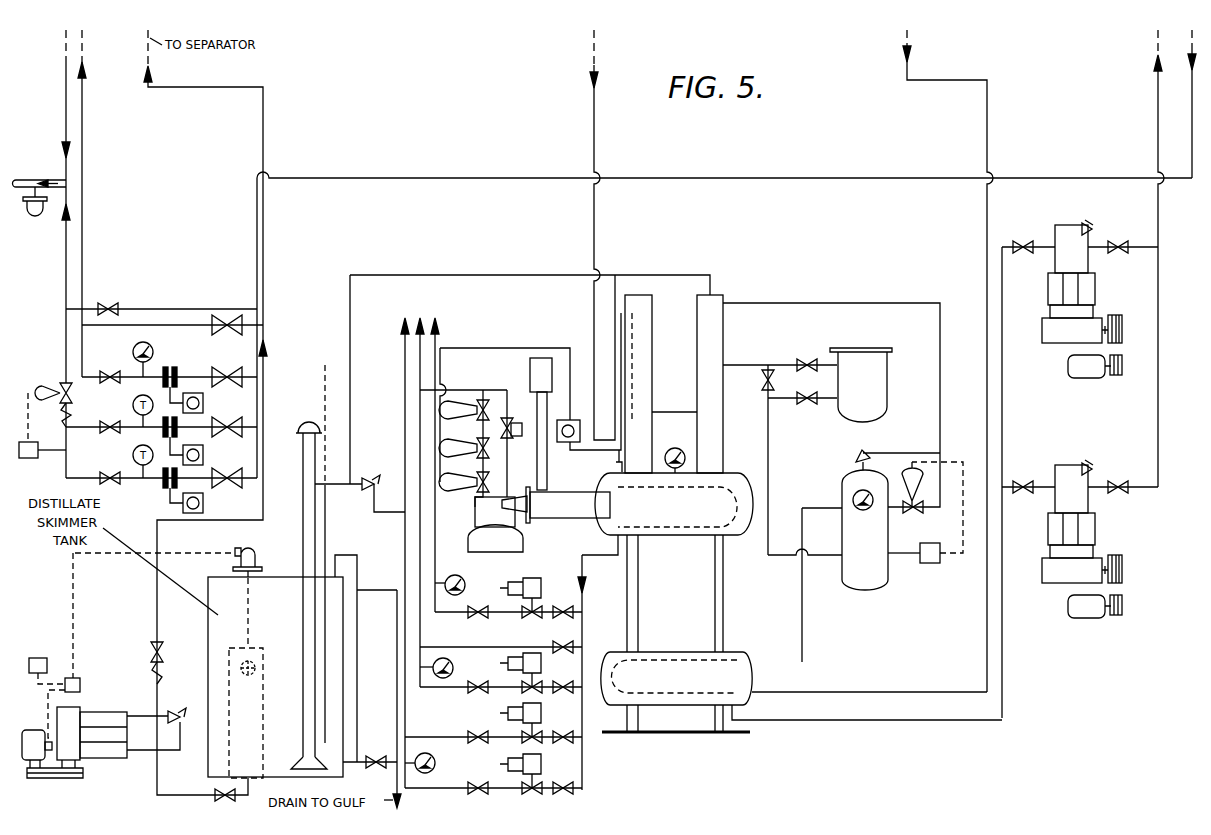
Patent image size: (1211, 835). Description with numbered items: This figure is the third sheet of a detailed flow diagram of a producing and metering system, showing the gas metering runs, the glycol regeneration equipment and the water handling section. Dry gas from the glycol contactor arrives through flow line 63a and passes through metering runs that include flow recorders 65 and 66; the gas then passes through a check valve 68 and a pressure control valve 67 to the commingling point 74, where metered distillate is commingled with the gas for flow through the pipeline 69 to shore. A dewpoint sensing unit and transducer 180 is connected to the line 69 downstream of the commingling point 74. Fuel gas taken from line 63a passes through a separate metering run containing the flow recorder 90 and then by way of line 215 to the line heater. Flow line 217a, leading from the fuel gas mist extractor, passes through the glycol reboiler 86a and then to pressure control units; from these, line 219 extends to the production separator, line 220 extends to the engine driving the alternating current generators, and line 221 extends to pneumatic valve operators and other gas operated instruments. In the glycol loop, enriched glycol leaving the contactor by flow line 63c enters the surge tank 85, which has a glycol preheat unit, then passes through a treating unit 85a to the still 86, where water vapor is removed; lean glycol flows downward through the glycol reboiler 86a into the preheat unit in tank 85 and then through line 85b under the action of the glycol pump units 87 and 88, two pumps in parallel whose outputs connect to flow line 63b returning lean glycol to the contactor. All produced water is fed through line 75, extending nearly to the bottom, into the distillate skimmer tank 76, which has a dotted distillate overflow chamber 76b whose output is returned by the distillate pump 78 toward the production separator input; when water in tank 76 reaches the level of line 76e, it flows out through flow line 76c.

The fuel gas line 215 is at (84, 58).
The commingling point 74 is at (68, 183).
The pipeline 69 is at (37, 176).
The dewpoint sensing unit and transducer 180 is at (32, 217).
The pressure control valve 67 is at (64, 390).
The check valve 68 is at (70, 414).
The flow recorder 90 is at (204, 403).
The flow recorder 66 is at (204, 455).
The flow recorder 65 is at (204, 503).
The distillate pump 78 is at (104, 713).
The distillate skimmer tank 76 is at (277, 611).
The distillate overflow chamber 76b is at (263, 664).
The level line 76e is at (368, 591).
The flow line 76c is at (397, 645).
The water feed line 75 is at (326, 457).
The fuel gas line 220 is at (405, 531).
The fuel gas line 219 is at (420, 547).
The fuel gas line 221 is at (437, 560).
The flow line 217a is at (596, 147).
The still 86 is at (654, 308).
The glycol reboiler 86a is at (635, 514).
The surge tank 85 is at (682, 651).
The treating unit 85a is at (825, 485).
The lean glycol line 85b is at (843, 723).
The flow line 63a is at (1192, 87).
The flow line 63b is at (1158, 135).
The flow line 63c is at (907, 72).
The glycol pump unit 88 is at (1038, 315).
The glycol pump unit 87 is at (1038, 548).